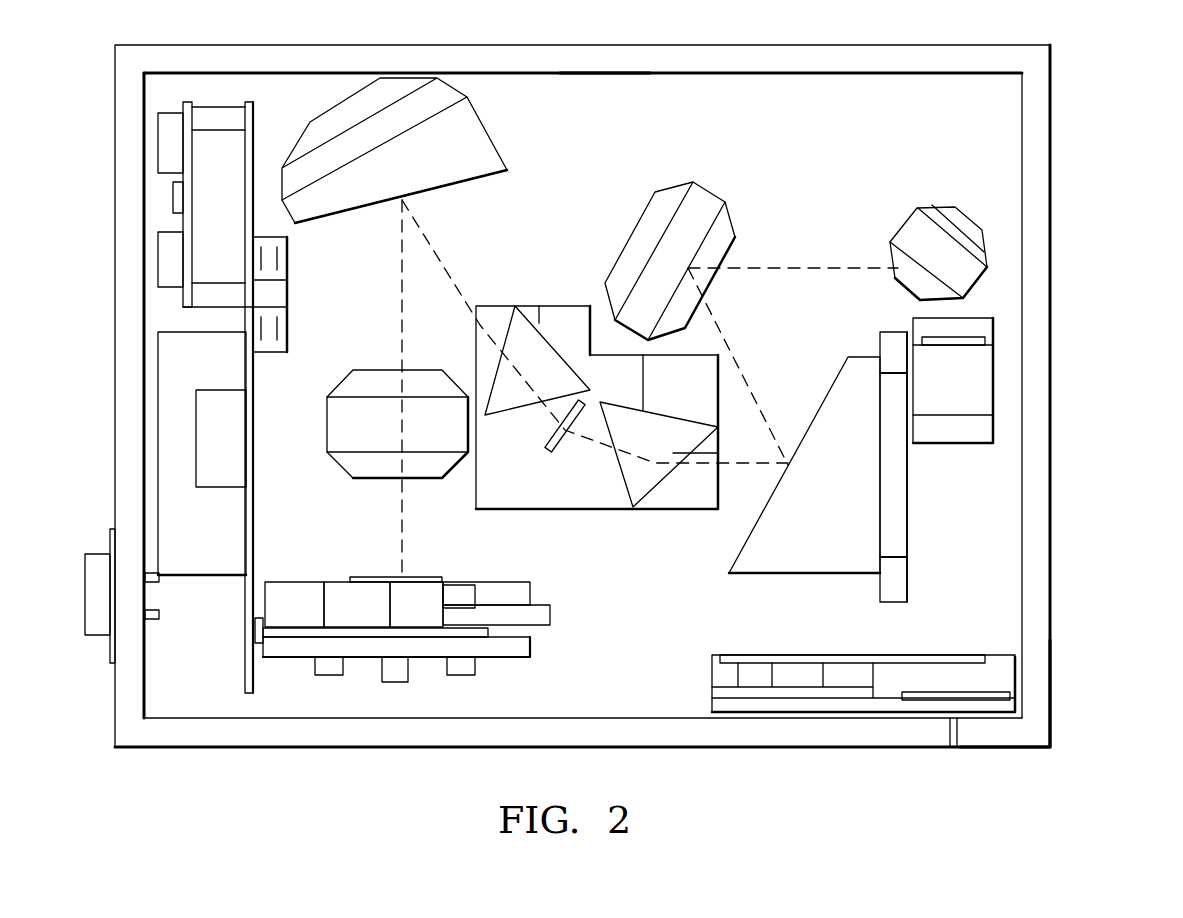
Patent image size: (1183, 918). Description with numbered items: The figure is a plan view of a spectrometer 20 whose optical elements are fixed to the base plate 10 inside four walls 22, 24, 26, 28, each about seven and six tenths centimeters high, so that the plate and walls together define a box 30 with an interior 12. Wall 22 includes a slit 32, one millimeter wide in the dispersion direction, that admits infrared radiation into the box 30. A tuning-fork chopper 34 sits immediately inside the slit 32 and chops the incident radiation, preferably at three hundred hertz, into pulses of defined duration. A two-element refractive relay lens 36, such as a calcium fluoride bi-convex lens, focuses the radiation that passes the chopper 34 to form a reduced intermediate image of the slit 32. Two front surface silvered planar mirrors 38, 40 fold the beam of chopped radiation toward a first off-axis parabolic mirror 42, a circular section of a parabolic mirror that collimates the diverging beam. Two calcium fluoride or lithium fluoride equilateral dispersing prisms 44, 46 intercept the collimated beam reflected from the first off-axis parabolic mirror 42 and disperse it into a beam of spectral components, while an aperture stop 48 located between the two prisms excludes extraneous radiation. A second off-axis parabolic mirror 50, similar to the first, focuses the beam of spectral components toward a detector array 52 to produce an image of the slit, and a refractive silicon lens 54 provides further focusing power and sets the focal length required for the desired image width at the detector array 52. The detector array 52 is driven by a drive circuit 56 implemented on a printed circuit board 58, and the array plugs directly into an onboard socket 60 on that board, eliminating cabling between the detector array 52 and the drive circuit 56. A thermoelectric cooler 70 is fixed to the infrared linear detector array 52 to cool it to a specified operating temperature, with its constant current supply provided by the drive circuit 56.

The base plate 10 is at (603, 92).
The interior cavity 12 is at (688, 115).
The spectrometer 20 is at (1075, 122).
The wall 22 is at (625, 727).
The wall 24 is at (1035, 420).
The wall 26 is at (780, 55).
The wall 28 is at (127, 228).
The box 30 is at (1053, 660).
The slit 32 is at (957, 727).
The tuning-fork chopper 34 is at (890, 688).
The two-element refractive relay lens 36 is at (975, 383).
The planar mirror 38 is at (953, 276).
The planar mirror 40 is at (700, 197).
The first off-axis parabolic mirror 42 is at (827, 538).
The dispersing prism 44 is at (642, 473).
The dispersing prism 46 is at (518, 343).
The aperture stop 48 is at (560, 430).
The second off-axis parabolic mirror 50 is at (470, 147).
The detector array 52 is at (413, 608).
The refractive silicon lens 54 is at (343, 422).
The drive circuit 56 is at (253, 440).
The printed circuit board 58 is at (248, 502).
The onboard socket 60 is at (257, 592).
The thermoelectric cooler 70 is at (377, 630).